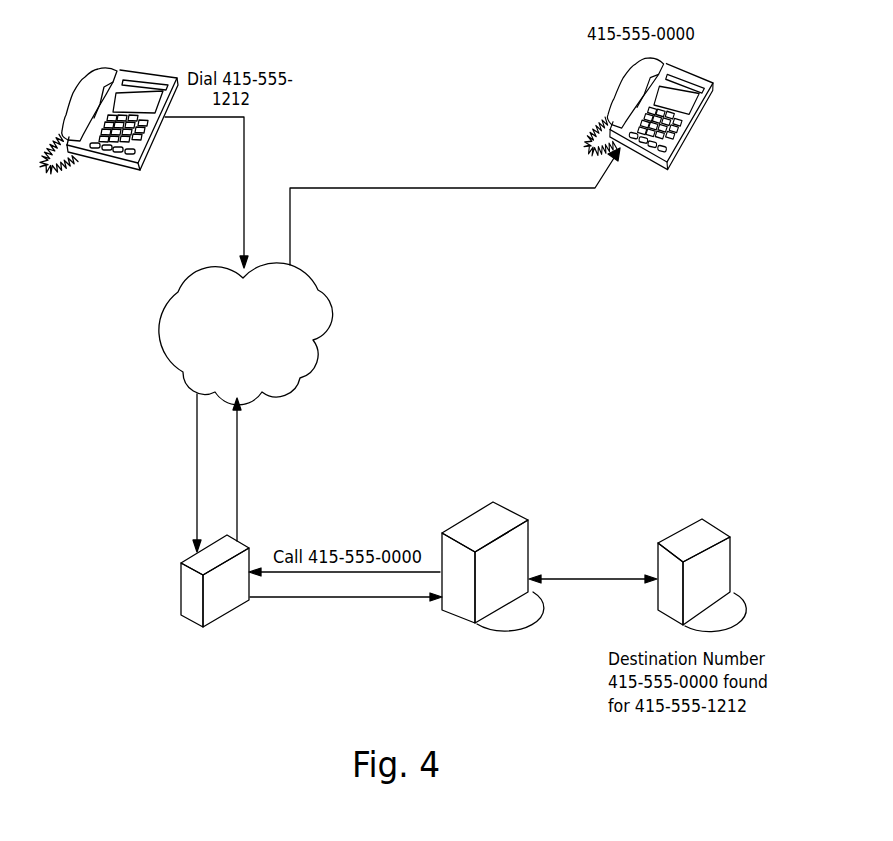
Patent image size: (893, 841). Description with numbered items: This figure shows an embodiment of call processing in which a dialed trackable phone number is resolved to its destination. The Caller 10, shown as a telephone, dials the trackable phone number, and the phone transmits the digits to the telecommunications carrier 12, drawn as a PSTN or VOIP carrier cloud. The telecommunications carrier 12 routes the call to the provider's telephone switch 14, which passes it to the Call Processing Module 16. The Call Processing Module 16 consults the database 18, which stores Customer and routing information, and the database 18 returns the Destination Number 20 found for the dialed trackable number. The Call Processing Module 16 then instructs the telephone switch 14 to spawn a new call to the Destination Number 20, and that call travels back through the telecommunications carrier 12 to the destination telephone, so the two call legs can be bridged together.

The Caller 10 is at (102, 163).
The telecommunications carrier 12 is at (315, 357).
The telephone switch 14 is at (210, 626).
The Call Processing Module 16 is at (465, 624).
The database 18 is at (668, 540).
The Destination Number 20 is at (682, 143).